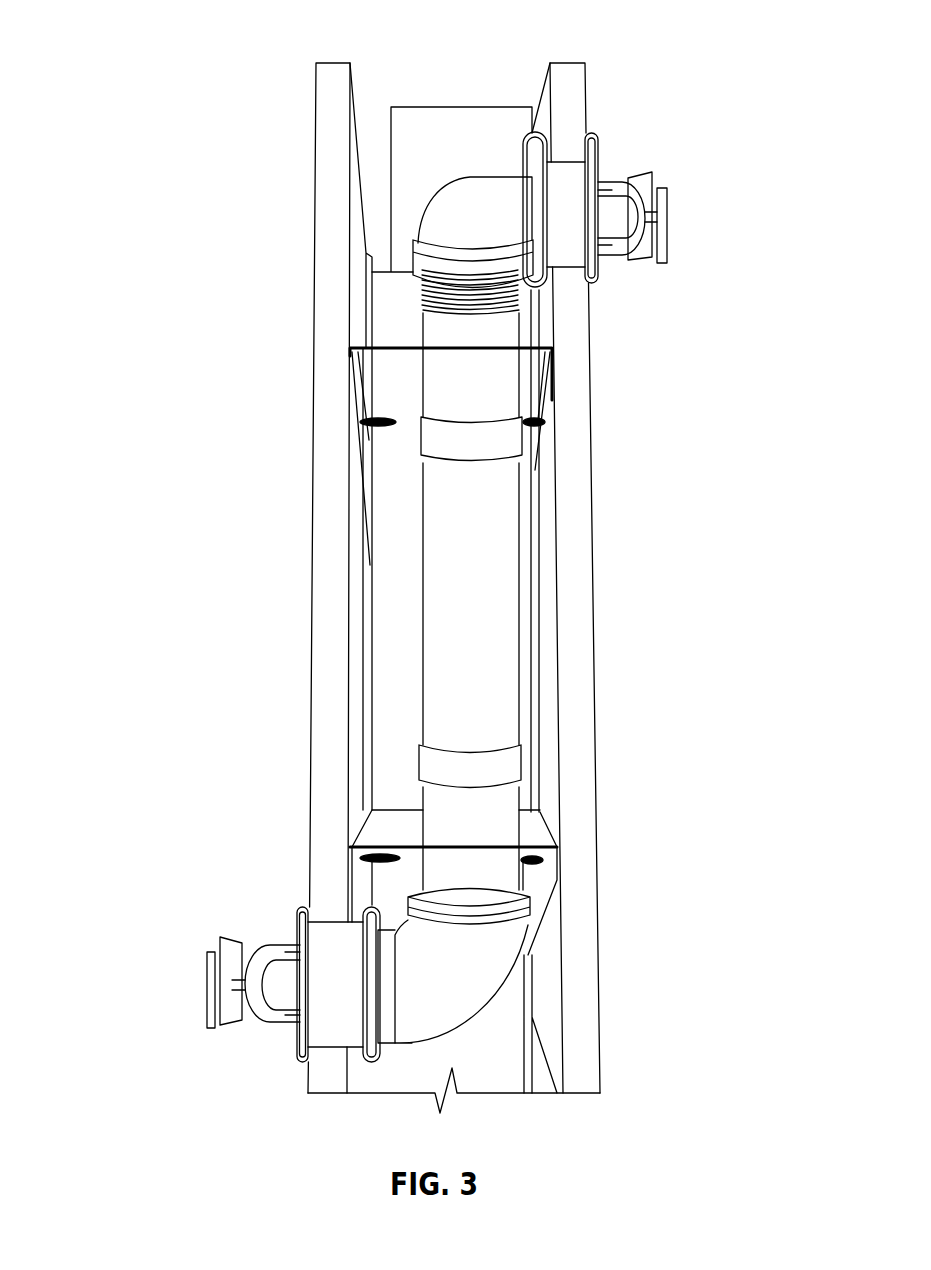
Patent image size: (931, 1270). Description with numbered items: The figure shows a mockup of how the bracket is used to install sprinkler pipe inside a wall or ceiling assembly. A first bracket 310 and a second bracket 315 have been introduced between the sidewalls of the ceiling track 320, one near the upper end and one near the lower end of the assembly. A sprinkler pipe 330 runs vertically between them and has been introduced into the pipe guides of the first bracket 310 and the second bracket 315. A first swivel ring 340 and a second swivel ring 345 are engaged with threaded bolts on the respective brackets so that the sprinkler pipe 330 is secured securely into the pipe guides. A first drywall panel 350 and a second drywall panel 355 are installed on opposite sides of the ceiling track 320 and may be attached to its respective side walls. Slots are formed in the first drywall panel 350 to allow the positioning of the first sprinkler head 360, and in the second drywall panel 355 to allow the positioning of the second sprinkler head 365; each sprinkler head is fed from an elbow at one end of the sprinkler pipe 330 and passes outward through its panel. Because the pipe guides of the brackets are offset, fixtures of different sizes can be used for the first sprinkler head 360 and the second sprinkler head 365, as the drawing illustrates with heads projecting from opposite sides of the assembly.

The first bracket 310 is at (536, 368).
The second bracket 315 is at (543, 882).
The ceiling track 320 is at (525, 617).
The sprinkler pipe 330 is at (510, 570).
The first swivel ring 340 is at (505, 437).
The second swivel ring 345 is at (505, 760).
The first drywall panel 350 is at (567, 82).
The second drywall panel 355 is at (333, 77).
The first sprinkler head 360 is at (685, 214).
The second sprinkler head 365 is at (188, 984).